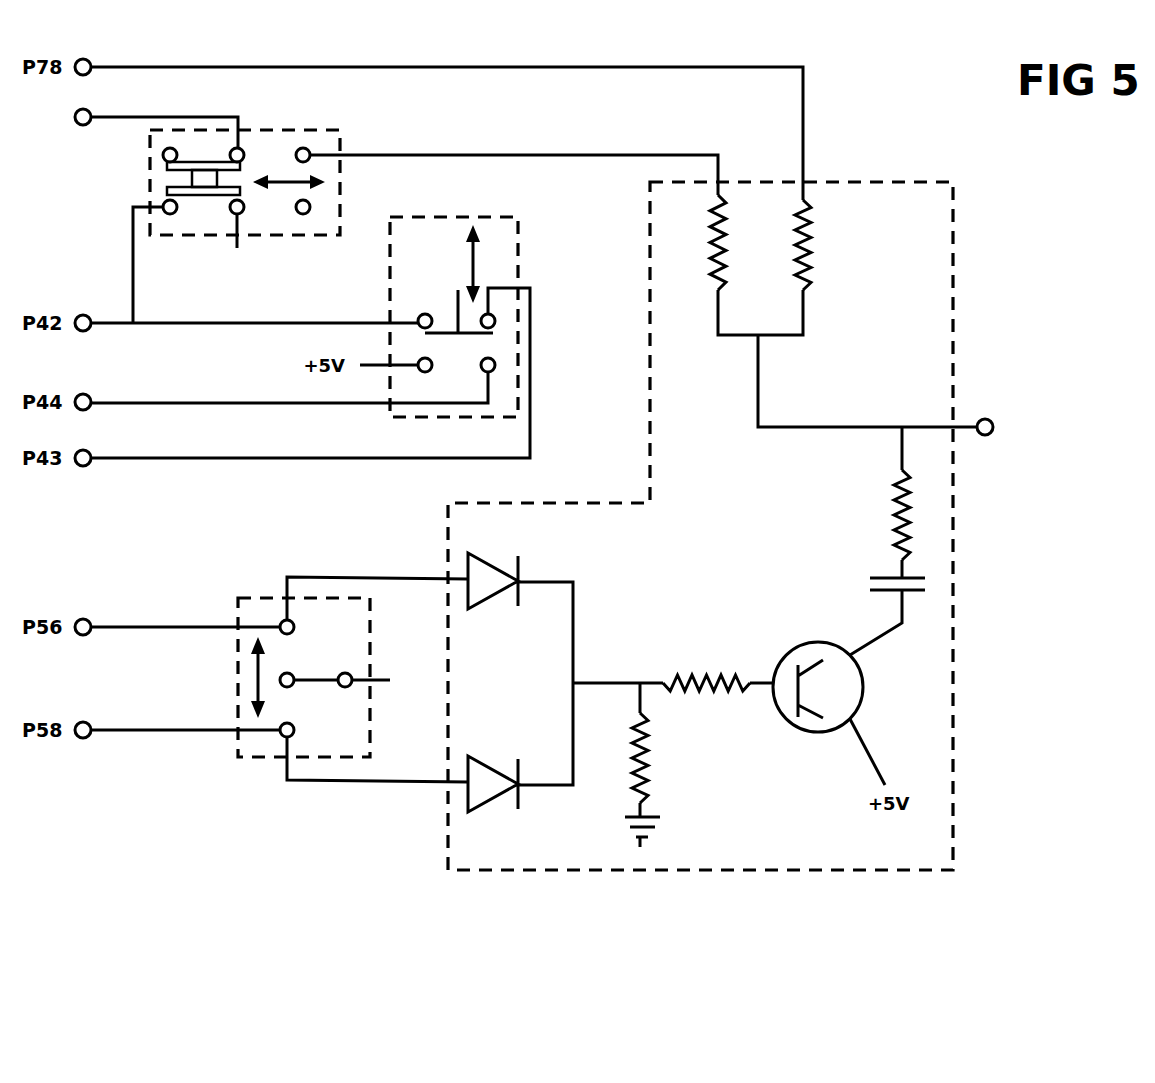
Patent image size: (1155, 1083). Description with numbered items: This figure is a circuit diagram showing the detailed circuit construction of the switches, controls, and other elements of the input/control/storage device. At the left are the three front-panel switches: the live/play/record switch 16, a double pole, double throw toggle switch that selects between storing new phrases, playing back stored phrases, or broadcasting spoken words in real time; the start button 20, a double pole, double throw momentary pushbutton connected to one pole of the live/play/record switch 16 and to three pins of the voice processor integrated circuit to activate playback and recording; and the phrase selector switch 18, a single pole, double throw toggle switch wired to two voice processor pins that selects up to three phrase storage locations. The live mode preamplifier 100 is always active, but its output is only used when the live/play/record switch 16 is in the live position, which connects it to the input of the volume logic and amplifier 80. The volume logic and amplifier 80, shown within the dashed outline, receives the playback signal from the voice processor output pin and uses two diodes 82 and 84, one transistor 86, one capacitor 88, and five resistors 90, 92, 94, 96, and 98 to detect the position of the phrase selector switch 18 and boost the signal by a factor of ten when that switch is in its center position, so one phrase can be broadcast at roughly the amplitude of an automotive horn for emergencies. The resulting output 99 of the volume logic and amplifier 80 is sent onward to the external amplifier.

The live/play/record switch 16 is at (148, 172).
The phrase selector switch 18 is at (263, 598).
The start button 20 is at (390, 275).
The volume logic and amplifier 80 is at (953, 258).
The diode 82 is at (493, 574).
The diode 84 is at (493, 775).
The transistor 86 is at (818, 675).
The capacitor 88 is at (878, 589).
The resistor 90 is at (656, 758).
The resistor 92 is at (706, 670).
The resistor 94 is at (701, 242).
The resistor 96 is at (818, 245).
The resistor 98 is at (882, 515).
The output 99 is at (991, 421).
The live mode preamplifier 100 is at (129, 127).